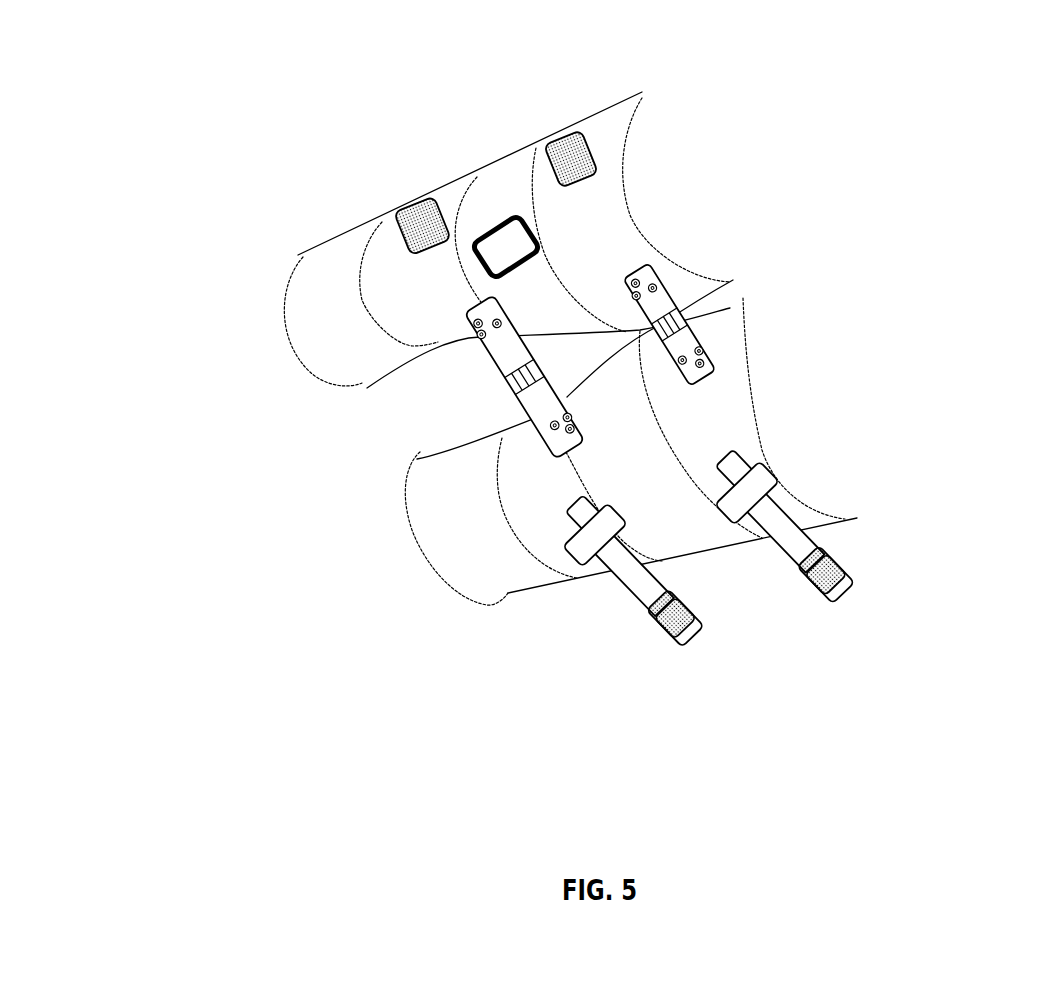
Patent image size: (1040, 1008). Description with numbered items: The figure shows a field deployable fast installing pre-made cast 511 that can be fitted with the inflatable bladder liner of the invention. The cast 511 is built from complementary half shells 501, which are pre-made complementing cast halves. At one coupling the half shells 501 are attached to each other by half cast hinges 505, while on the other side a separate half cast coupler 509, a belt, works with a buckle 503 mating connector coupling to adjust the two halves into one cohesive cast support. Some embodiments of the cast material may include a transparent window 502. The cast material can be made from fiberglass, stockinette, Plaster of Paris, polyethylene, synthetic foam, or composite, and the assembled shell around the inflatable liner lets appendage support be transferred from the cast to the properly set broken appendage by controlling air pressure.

The complementary half shells 501 is at (330, 262).
The transparent window 502 is at (503, 235).
The buckle 503 is at (567, 148).
The half cast hinge 505 is at (496, 381).
The half cast coupler 509 is at (614, 589).
The fast installing pre-made cast 511 is at (831, 244).